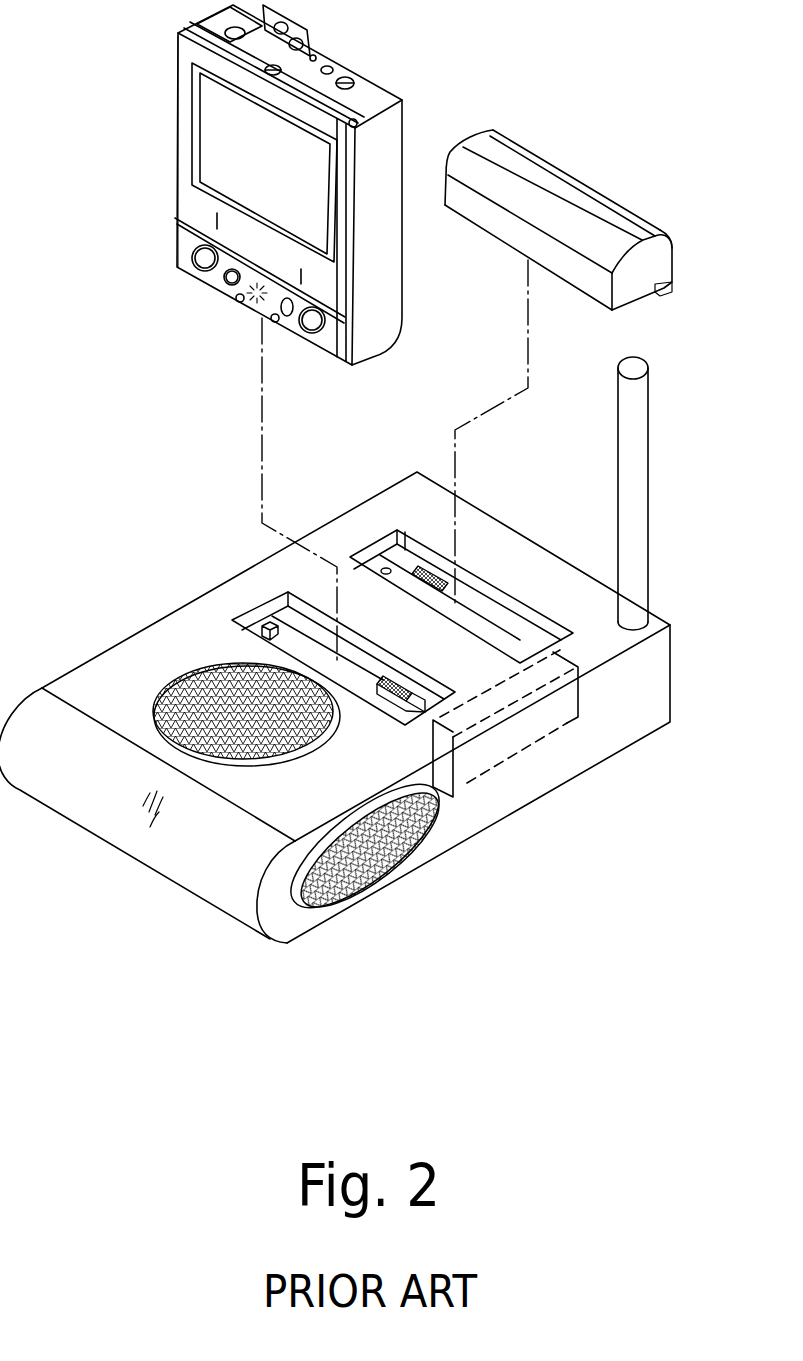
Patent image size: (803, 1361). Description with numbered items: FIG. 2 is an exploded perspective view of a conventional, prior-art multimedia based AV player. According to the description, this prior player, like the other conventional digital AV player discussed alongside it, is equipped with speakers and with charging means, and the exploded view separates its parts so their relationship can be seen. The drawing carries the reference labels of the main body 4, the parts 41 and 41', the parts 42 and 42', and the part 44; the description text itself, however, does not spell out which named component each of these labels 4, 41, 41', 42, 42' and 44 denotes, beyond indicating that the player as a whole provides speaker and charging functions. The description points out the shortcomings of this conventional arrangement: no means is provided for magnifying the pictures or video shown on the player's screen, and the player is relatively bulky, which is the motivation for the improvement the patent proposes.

The charging base 4 is at (174, 620).
The first receiving slot 41 is at (325, 622).
The charging contact of first slot 41' is at (477, 763).
The second receiving slot 42 is at (530, 652).
The charging contact of second slot 42' is at (396, 524).
The speaker 44 is at (170, 675).